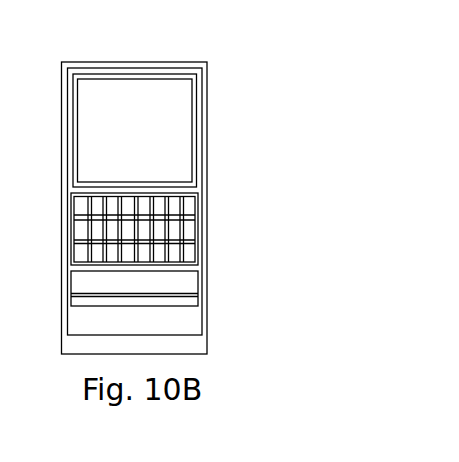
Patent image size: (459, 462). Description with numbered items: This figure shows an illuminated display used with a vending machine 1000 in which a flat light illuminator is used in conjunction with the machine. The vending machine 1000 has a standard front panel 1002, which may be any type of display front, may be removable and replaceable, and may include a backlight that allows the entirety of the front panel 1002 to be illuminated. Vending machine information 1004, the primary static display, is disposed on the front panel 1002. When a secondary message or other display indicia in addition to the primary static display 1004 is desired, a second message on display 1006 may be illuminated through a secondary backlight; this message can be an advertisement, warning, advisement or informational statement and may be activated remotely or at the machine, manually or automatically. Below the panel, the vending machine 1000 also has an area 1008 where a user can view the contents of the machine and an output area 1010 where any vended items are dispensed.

The vending machine 1000 is at (247, 57).
The front panel 1002 is at (197, 68).
The vending machine information 1004 is at (182, 118).
The display 1006 is at (182, 172).
The area 1008 is at (172, 235).
The output area 1010 is at (178, 288).